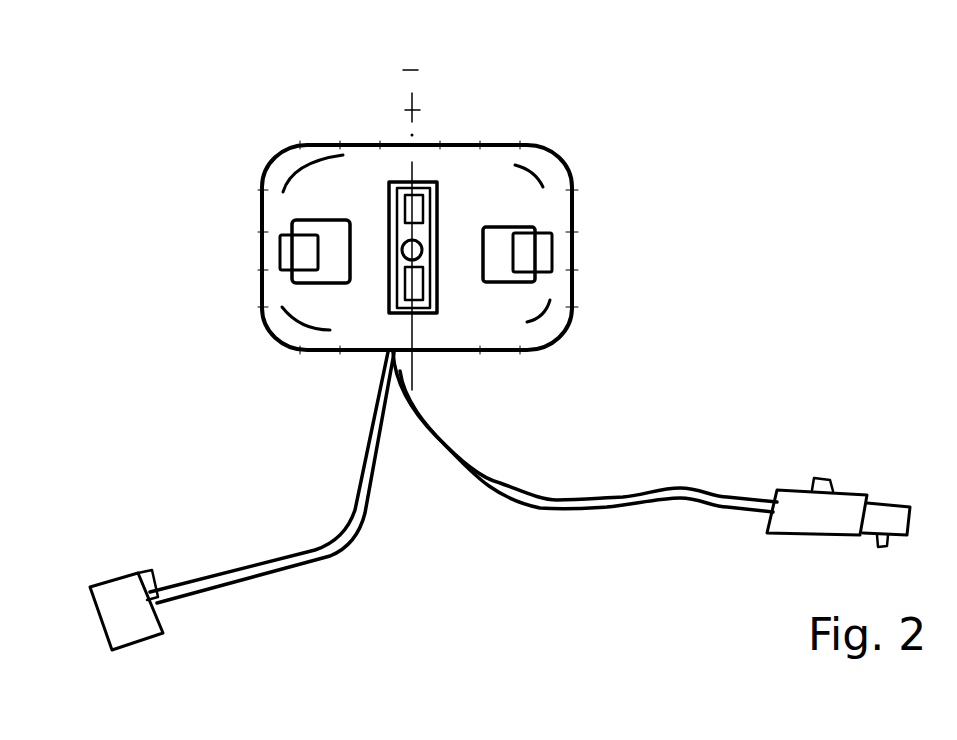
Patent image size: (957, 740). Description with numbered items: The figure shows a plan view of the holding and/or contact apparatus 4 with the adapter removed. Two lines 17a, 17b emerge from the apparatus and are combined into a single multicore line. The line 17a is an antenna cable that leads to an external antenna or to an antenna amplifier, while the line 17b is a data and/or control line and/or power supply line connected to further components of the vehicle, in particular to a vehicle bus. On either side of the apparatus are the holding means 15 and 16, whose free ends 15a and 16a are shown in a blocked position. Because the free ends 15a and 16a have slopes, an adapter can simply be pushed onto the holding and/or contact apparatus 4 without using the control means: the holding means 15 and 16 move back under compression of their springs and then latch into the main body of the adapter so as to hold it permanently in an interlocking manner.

The holding and/or contact apparatus 4 is at (595, 118).
The holding means 15 is at (248, 230).
The free end of holding means 15a is at (290, 245).
The holding means 16 is at (550, 223).
The free end of holding means 16a is at (548, 252).
The antenna cable 17a is at (697, 488).
The data and/or control line and/or power supply line 17b is at (288, 570).